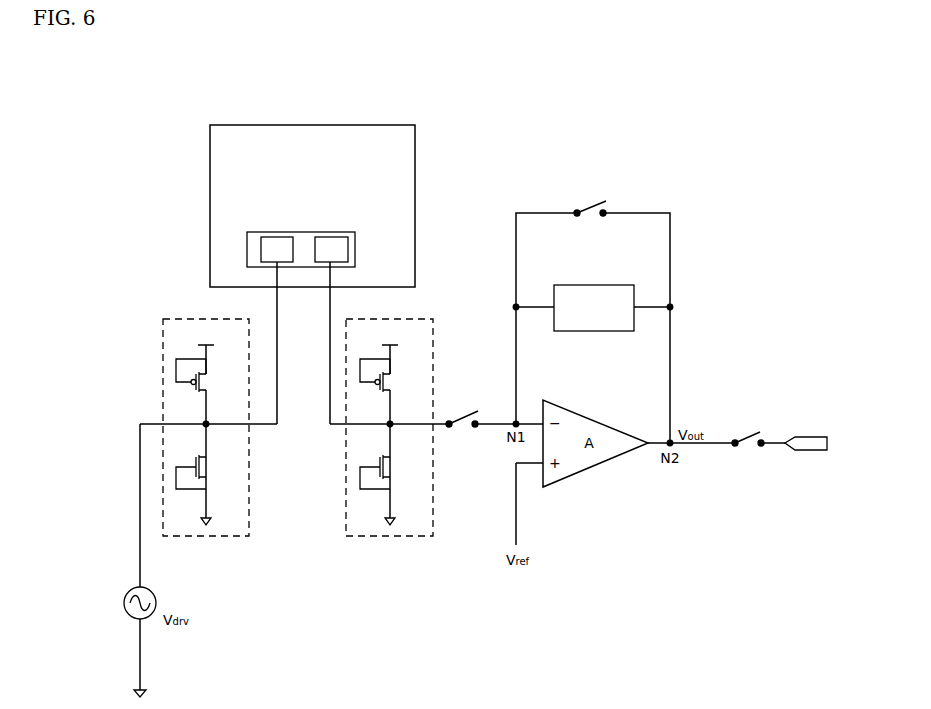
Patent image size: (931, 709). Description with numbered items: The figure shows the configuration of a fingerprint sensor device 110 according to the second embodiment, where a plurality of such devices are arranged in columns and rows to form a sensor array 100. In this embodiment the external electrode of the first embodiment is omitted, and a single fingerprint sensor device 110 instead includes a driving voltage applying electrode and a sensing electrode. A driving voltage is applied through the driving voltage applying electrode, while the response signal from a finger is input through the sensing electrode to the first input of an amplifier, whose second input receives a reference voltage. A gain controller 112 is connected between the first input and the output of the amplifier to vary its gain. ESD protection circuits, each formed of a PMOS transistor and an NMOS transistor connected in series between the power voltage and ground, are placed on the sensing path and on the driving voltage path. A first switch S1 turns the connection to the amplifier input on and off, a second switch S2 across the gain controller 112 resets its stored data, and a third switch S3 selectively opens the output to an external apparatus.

The sensor array 100 is at (383, 125).
The fingerprint sensor device 110 is at (255, 224).
The gain controller 112 is at (617, 285).
The first switch S1 is at (462, 409).
The second switch S2 is at (590, 200).
The third switch S3 is at (748, 430).